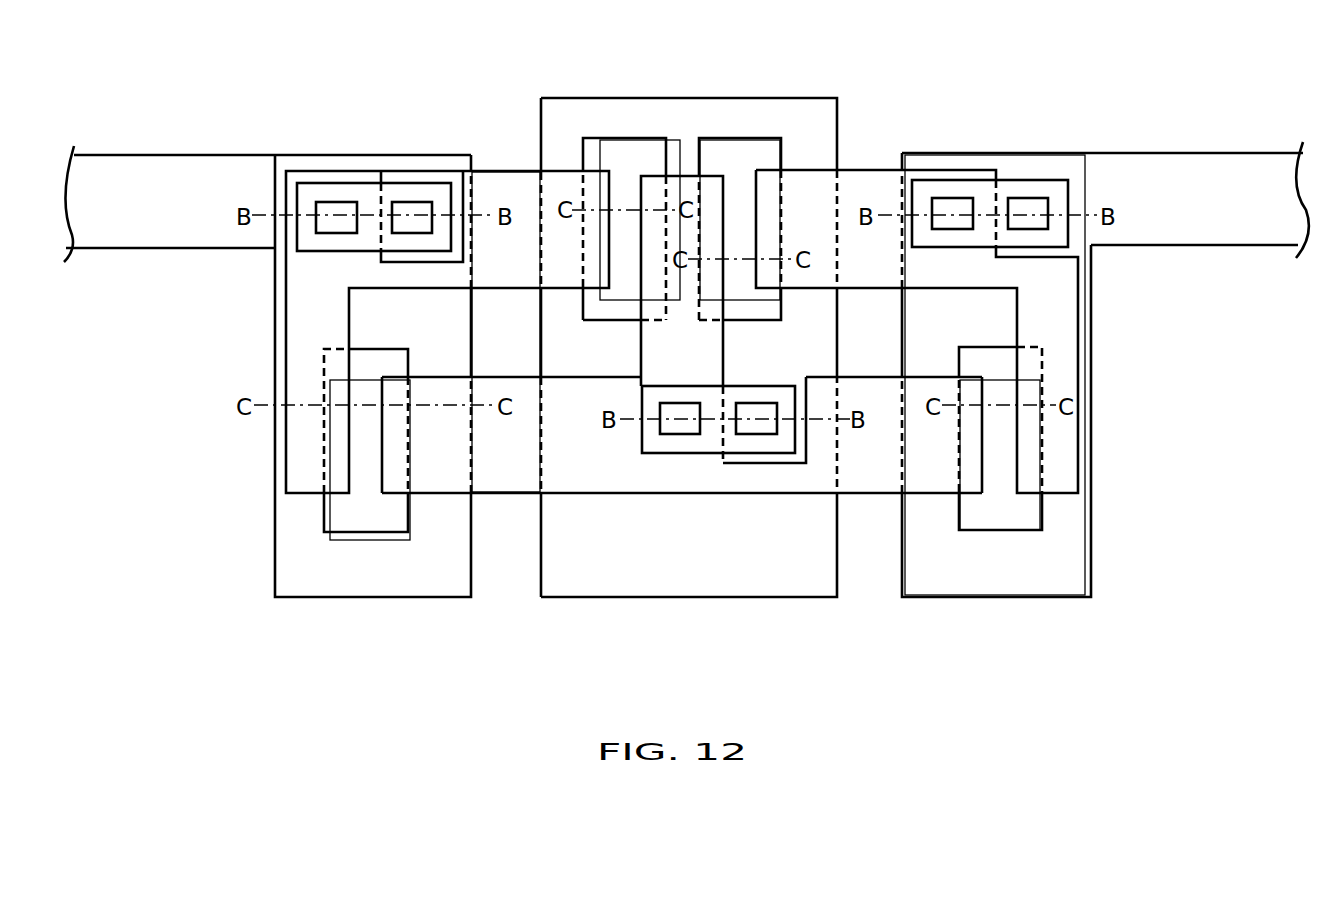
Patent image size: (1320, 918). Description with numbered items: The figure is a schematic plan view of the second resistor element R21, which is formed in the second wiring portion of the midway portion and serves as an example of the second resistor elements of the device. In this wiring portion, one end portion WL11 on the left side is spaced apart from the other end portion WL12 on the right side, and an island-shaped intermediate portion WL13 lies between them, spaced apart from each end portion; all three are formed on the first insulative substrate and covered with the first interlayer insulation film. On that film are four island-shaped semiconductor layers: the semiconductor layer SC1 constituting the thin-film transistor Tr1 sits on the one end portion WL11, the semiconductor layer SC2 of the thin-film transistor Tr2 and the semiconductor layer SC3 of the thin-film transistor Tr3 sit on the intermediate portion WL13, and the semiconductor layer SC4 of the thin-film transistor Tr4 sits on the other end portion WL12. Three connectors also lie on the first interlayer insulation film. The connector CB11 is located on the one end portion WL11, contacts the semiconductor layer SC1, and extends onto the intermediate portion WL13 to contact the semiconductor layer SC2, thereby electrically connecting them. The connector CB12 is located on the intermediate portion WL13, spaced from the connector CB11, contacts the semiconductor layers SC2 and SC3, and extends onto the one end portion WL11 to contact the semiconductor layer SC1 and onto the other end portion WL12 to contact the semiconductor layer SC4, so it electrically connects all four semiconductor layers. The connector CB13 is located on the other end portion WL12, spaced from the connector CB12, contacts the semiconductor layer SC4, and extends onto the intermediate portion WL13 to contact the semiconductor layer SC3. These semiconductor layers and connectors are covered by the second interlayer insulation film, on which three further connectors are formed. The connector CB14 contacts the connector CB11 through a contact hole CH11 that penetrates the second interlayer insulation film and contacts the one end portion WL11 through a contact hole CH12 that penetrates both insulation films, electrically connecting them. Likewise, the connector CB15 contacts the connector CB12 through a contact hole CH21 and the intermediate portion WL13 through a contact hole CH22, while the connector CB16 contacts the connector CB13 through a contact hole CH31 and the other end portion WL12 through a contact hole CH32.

The one end portion WL11 is at (305, 597).
The other end portion WL12 is at (943, 597).
The intermediate portion WL13 is at (605, 597).
The connector CB11 is at (286, 318).
The connector CB12 is at (507, 493).
The connector CB13 is at (1079, 327).
The connector CB14 is at (297, 195).
The connector CB15 is at (642, 440).
The connector CB16 is at (1068, 193).
The contact hole CH11 is at (333, 190).
The contact hole CH12 is at (411, 190).
The contact hole CH21 is at (679, 448).
The contact hole CH22 is at (755, 448).
The contact hole CH31 is at (947, 186).
The contact hole CH32 is at (1029, 186).
The semiconductor layer SC1 is at (375, 532).
The semiconductor layer SC2 is at (607, 138).
The semiconductor layer SC3 is at (730, 138).
The semiconductor layer SC4 is at (1015, 530).
The thin-film transistor Tr1 is at (407, 556).
The thin-film transistor Tr2 is at (647, 116).
The thin-film transistor Tr3 is at (770, 116).
The thin-film transistor Tr4 is at (1064, 513).
The second resistor element R21 is at (1005, 117).